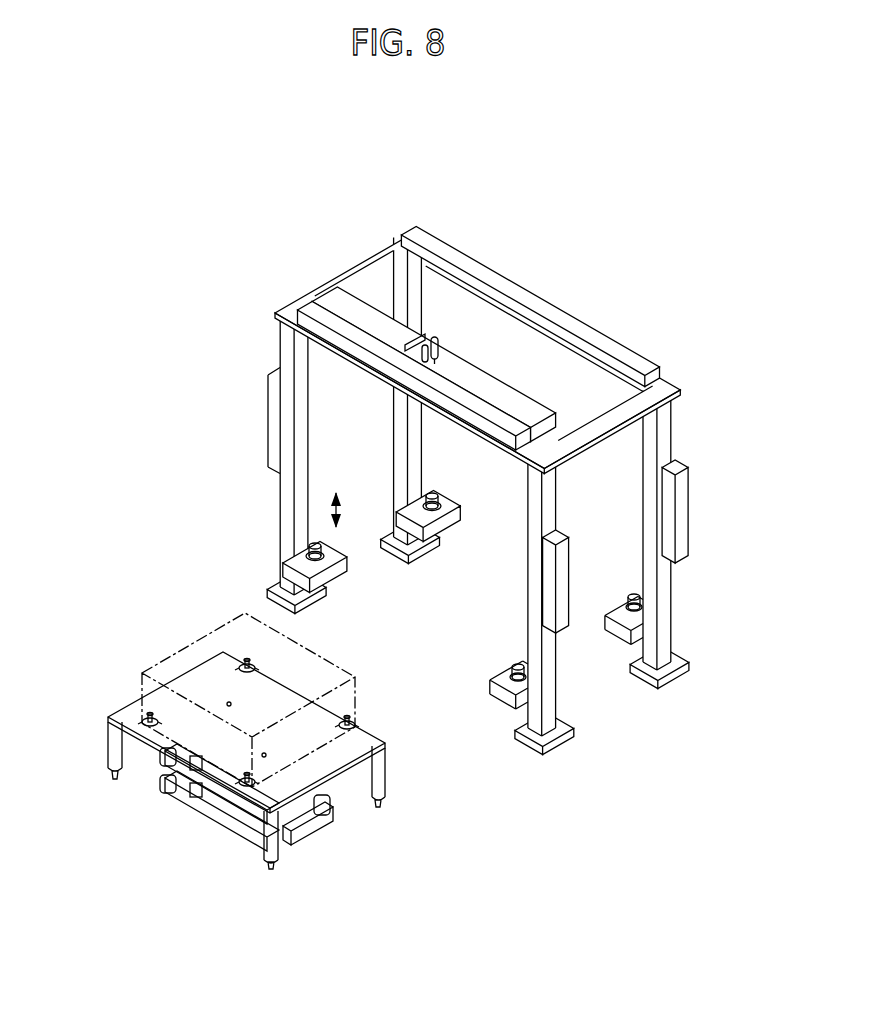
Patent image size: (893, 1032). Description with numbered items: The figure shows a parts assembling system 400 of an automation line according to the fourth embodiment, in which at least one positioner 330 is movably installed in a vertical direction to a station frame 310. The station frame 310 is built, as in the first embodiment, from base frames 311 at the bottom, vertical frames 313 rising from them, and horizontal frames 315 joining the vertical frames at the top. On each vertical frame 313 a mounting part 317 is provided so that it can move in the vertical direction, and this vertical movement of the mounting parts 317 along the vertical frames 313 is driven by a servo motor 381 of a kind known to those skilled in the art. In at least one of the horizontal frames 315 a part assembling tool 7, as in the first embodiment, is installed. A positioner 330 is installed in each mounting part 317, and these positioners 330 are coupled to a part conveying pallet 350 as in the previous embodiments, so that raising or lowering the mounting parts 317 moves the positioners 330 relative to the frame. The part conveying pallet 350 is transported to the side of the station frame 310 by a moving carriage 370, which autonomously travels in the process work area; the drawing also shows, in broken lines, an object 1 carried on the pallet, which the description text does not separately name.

The parts assembling system 400 is at (397, 181).
The station frame 310 is at (630, 330).
The horizontal frame 315 is at (338, 282).
The vertical frame 313 is at (407, 418).
The base frame 311 is at (313, 598).
The mounting part 317 is at (341, 565).
The positioner 330 is at (304, 551).
The servo motor 381 is at (272, 420).
The part assembling tool 7 is at (452, 327).
The object 1 is at (171, 649).
The part conveying pallet 350 is at (114, 706).
The moving carriage 370 is at (200, 813).